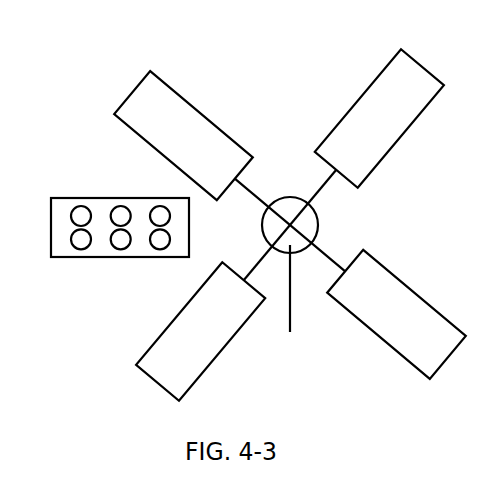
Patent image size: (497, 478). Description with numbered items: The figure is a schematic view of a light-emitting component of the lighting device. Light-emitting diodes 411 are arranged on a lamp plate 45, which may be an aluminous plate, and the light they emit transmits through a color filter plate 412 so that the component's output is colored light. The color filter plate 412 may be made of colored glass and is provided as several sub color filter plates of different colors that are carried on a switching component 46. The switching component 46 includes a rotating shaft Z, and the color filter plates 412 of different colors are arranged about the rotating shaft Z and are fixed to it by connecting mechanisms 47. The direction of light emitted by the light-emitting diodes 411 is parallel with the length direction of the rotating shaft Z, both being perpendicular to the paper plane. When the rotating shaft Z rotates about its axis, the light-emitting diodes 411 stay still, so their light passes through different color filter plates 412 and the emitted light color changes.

The color filter plate 412 is at (183, 130).
The connecting mechanism 47 is at (250, 190).
The switching component 46 is at (317, 223).
The rotating shaft Z is at (290, 305).
The lamp plate 45 is at (63, 248).
The light-emitting diode 411 is at (81, 216).